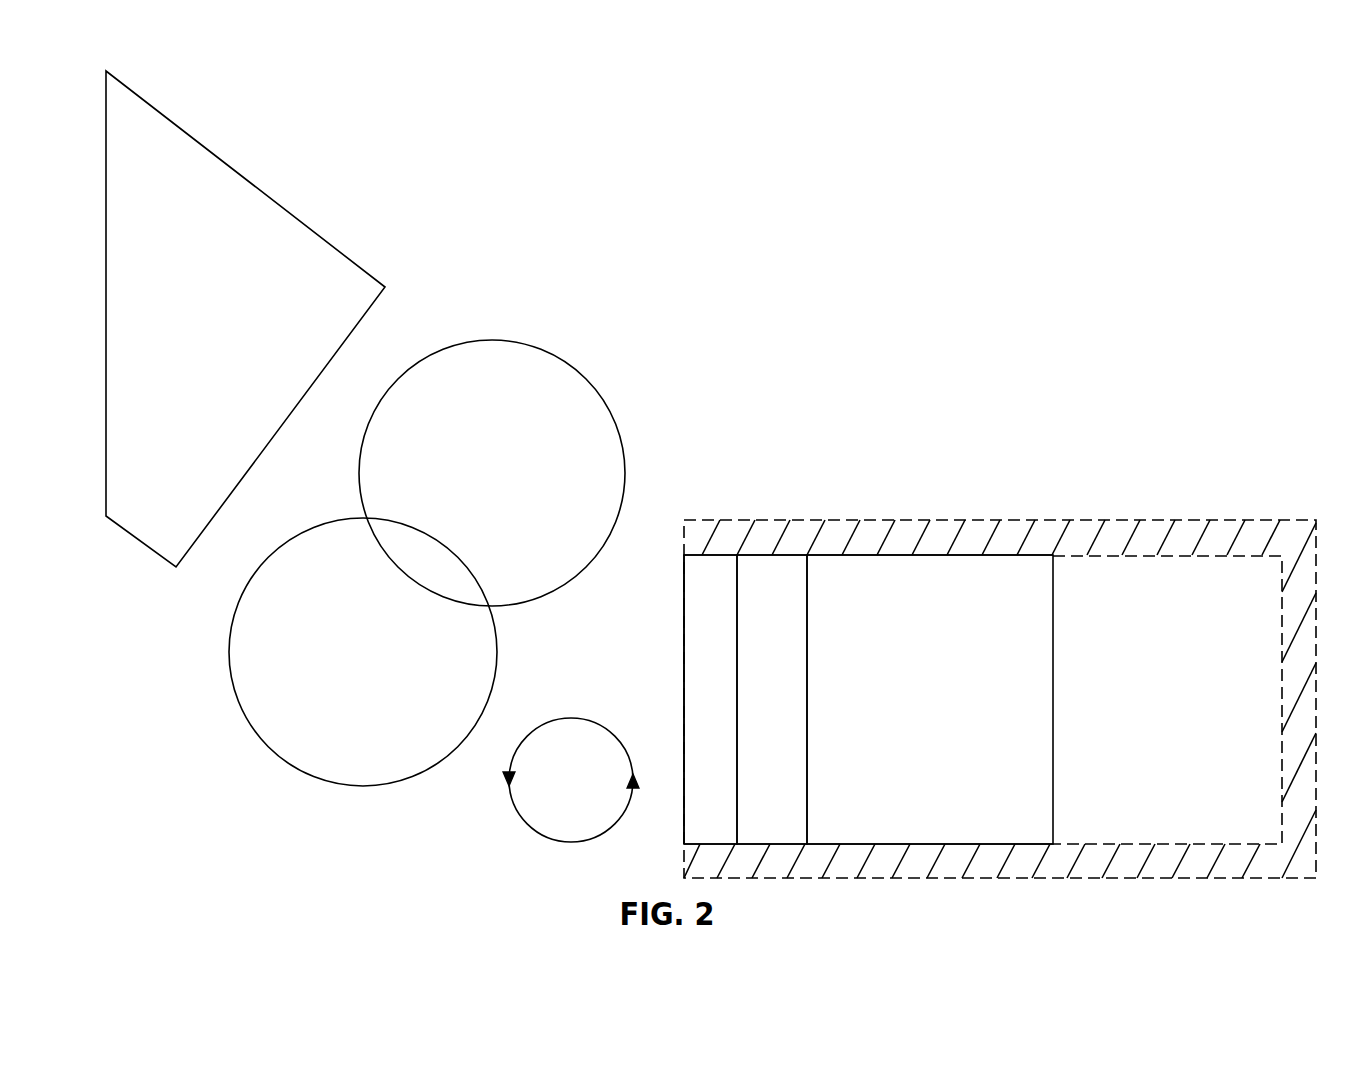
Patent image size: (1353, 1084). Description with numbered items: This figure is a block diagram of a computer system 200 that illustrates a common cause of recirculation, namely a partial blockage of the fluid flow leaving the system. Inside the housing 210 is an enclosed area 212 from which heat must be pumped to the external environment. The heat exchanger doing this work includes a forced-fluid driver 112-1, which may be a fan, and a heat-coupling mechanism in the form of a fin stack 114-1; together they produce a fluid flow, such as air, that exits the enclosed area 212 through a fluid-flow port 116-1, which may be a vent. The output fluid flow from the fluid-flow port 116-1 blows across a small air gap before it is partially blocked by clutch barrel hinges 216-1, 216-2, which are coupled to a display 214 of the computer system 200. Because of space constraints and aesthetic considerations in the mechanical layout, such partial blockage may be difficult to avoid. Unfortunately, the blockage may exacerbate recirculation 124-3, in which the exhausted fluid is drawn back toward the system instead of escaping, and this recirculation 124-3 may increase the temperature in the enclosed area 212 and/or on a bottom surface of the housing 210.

The computer system 200 is at (1156, 188).
The display 214 is at (322, 232).
The clutch barrel hinge 216-1 is at (605, 405).
The clutch barrel hinge 216-2 is at (233, 693).
The recirculation 124-3 is at (512, 798).
The housing 210 is at (869, 539).
The enclosed area 212 is at (1205, 700).
The fluid-flow port 116-1 is at (710, 573).
The fin stack 114-1 is at (773, 572).
The forced-fluid driver 112-1 is at (908, 724).